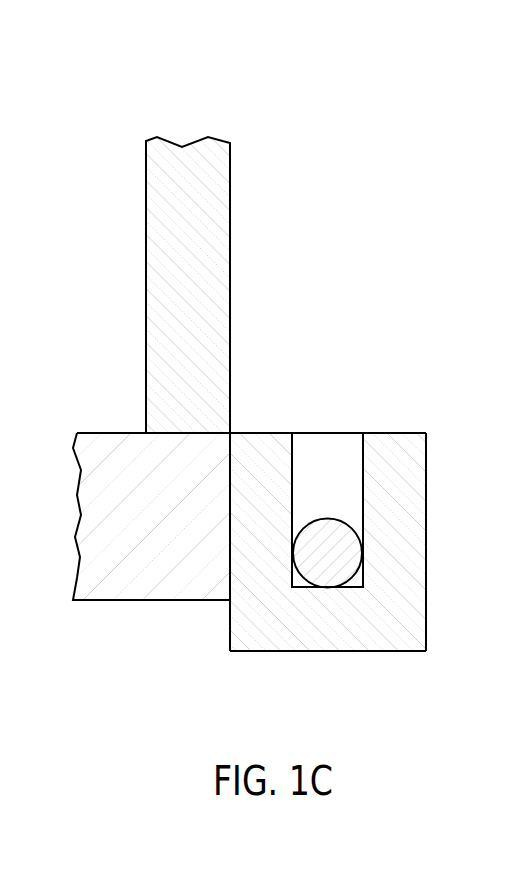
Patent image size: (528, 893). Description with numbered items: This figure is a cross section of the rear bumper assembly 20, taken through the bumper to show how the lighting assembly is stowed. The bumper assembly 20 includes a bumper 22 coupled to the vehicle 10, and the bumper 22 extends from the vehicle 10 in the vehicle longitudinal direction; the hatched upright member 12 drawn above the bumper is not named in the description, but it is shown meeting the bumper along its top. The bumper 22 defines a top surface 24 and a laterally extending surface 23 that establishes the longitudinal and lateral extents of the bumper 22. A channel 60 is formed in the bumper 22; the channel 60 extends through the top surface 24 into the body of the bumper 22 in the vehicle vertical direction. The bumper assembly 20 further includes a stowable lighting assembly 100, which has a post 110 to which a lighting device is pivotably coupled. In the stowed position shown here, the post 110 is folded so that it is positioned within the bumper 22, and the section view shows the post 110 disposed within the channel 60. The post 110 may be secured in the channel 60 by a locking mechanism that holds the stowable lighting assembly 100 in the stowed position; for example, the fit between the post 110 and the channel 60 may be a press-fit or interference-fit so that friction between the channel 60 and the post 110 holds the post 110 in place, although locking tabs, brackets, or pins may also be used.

The vehicle 10 is at (132, 110).
The panel 12 is at (230, 230).
The bumper assembly 20 is at (277, 542).
The bumper 22 is at (360, 652).
The laterally extending surface 23 is at (427, 608).
The top surface 24 is at (397, 433).
The channel 60 is at (359, 420).
The stowable lighting assembly 100 is at (380, 502).
The post 110 is at (358, 555).